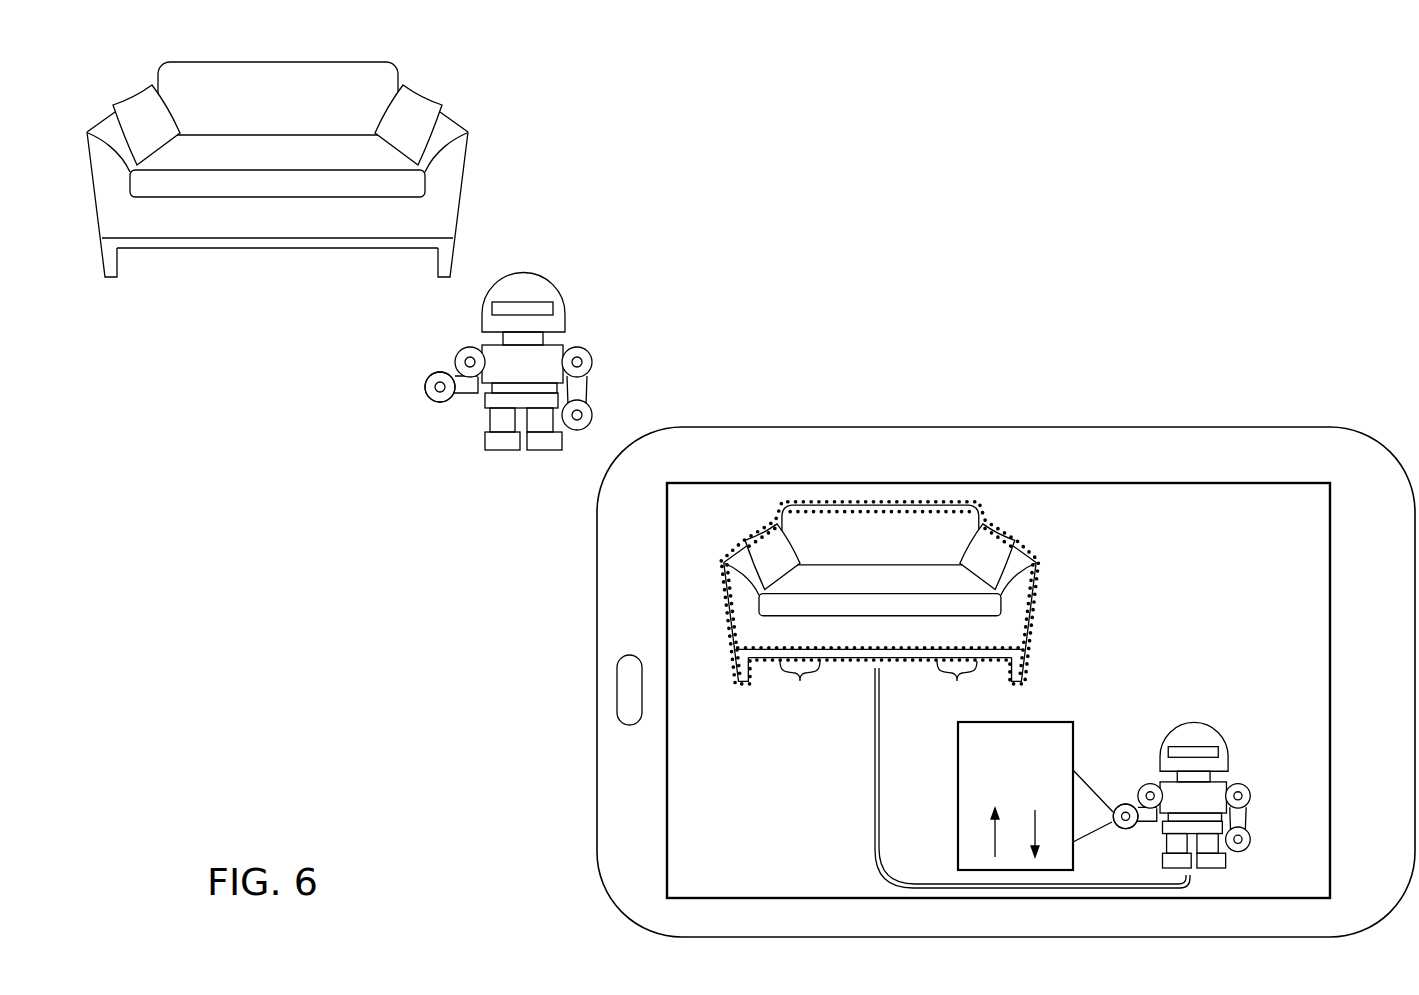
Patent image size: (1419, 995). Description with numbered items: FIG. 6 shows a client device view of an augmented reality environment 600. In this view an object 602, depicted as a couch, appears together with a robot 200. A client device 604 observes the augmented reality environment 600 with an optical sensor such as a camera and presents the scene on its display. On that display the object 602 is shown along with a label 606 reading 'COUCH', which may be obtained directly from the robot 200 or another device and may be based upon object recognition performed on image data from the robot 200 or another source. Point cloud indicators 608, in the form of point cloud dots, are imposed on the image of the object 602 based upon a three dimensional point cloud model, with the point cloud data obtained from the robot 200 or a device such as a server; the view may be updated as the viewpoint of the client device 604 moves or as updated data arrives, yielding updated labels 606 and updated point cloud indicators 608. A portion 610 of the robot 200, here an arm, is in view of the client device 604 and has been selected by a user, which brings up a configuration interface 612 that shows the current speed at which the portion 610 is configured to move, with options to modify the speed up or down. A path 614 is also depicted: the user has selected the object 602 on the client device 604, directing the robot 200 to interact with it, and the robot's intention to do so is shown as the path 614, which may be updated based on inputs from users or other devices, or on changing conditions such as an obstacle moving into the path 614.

The augmented reality environment 600 is at (1352, 136).
The object 602 is at (470, 136).
The client device 604 is at (1233, 483).
The label 606 is at (1103, 517).
The point cloud indicators 608 is at (878, 690).
The portion 610 is at (447, 401).
The configuration interface 612 is at (957, 806).
The path 614 is at (875, 805).
The robot 200 is at (565, 318).